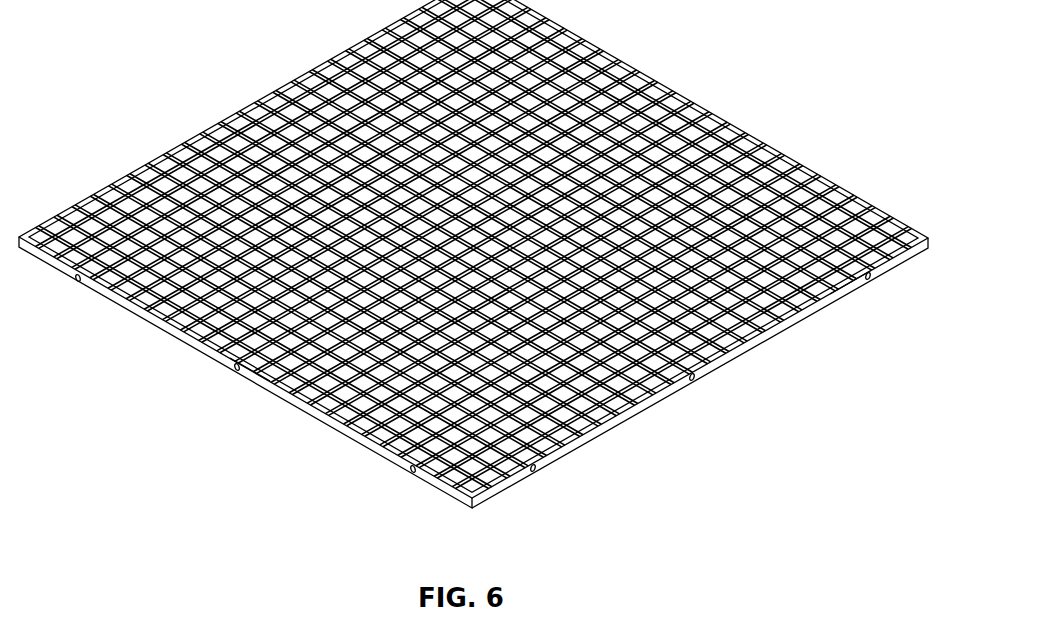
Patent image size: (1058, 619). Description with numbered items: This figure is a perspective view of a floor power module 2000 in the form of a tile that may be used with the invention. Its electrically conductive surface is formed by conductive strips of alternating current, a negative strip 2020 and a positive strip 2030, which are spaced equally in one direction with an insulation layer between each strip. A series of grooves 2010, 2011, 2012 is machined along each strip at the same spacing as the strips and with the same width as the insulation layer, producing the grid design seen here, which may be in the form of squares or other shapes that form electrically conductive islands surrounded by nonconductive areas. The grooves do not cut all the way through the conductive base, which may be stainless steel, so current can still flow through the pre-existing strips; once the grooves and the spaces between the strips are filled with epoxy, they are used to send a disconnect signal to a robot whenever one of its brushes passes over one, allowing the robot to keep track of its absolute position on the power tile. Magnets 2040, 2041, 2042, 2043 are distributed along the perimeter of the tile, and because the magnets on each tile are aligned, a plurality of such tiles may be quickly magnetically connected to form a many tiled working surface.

The floor power module 2000 is at (476, 284).
The groove 2010 is at (838, 184).
The groove 2011 is at (848, 283).
The groove 2012 is at (262, 370).
The conductive strip (negative) 2020 is at (538, 462).
The conductive strip (positive) 2030 is at (457, 473).
The magnet 2040 is at (78, 281).
The magnet 2041 is at (413, 472).
The magnet 2042 is at (692, 380).
The magnet 2043 is at (868, 279).